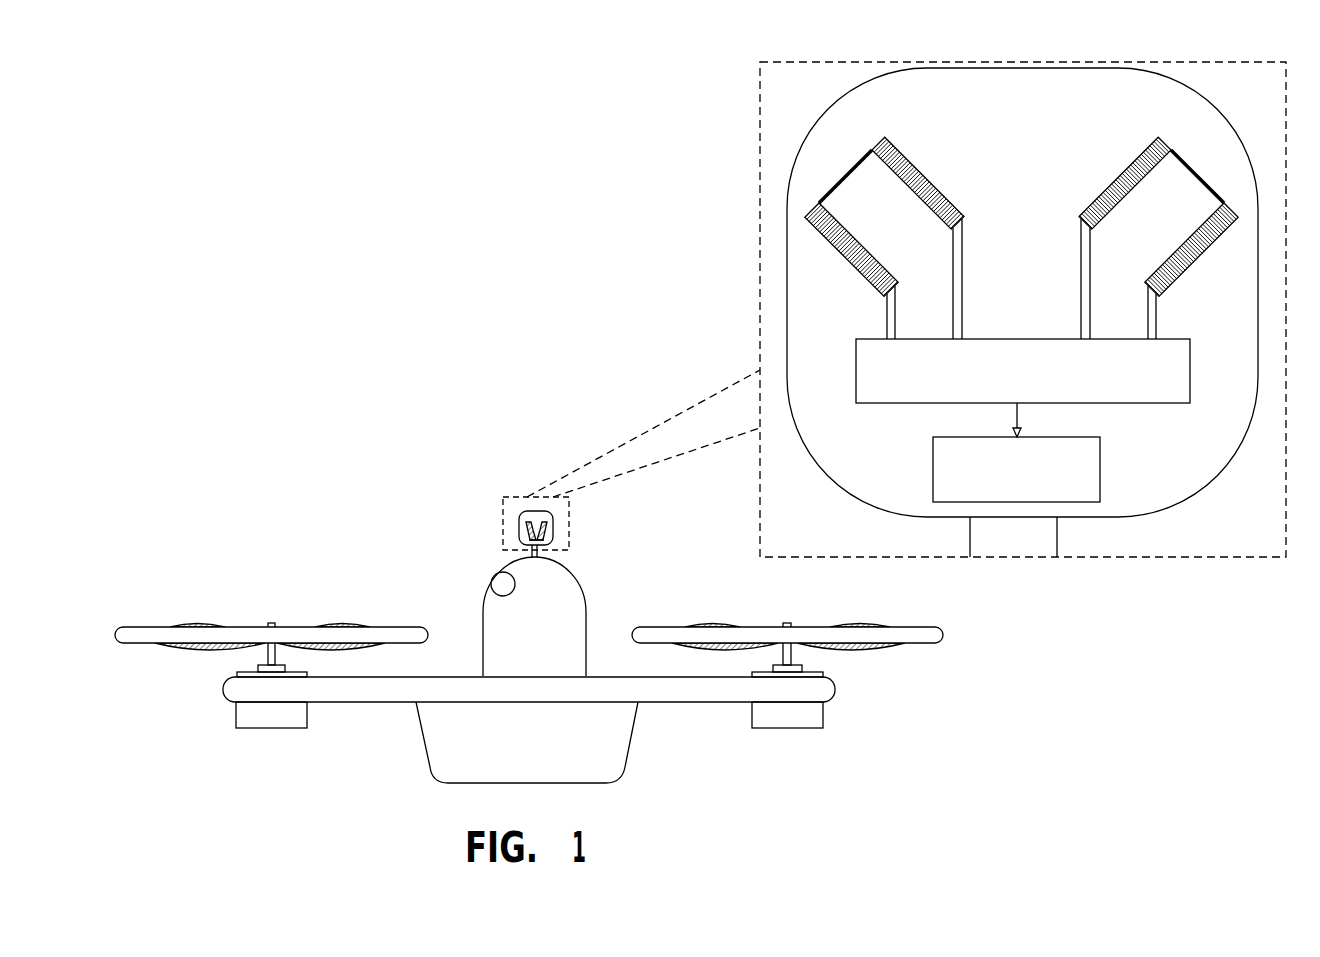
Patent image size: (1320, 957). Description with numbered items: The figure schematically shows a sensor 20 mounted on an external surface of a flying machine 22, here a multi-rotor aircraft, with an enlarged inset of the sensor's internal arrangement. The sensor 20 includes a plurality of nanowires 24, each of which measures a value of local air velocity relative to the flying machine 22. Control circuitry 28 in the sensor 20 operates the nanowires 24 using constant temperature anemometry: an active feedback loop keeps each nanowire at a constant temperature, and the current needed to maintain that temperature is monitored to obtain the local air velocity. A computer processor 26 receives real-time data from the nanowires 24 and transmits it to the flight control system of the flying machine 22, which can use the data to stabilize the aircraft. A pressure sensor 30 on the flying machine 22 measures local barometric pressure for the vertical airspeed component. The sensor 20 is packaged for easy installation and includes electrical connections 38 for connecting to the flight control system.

The sensor 20 is at (787, 222).
The flying machine 22 is at (317, 572).
The nanowires 24 is at (858, 166).
The computer processor 26 is at (1100, 478).
The control circuitry 28 is at (862, 338).
The pressure sensor 30 is at (495, 575).
The electrical connections 38 is at (1045, 546).